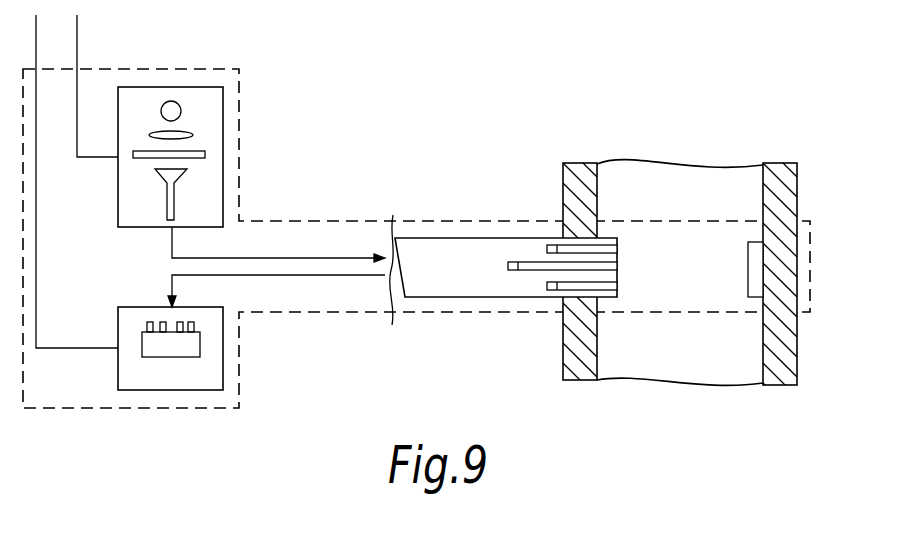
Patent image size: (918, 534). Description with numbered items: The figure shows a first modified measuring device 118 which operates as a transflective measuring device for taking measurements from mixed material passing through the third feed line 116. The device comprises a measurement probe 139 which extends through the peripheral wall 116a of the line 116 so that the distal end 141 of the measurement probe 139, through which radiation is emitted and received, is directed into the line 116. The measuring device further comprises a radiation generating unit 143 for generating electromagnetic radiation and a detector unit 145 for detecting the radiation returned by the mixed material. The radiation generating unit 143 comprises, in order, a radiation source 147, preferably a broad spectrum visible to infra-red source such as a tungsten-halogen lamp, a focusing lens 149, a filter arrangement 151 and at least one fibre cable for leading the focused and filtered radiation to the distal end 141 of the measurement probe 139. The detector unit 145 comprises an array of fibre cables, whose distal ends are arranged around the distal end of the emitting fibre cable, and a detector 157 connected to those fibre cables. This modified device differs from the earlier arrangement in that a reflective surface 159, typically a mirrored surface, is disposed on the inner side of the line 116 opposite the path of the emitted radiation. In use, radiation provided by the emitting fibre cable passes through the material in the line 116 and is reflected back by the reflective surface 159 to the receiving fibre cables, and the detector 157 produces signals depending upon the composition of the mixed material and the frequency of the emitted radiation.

The peripheral wall 116a is at (580, 192).
The third feed line 116 is at (777, 228).
The measuring device 118 is at (338, 322).
The measurement probe 139 is at (507, 297).
The distal end 141 is at (570, 269).
The radiation generating unit 143 is at (182, 130).
The detector unit 145 is at (203, 334).
The radiation source 147 is at (171, 101).
The focusing lens 149 is at (193, 136).
The filter arrangement 151 is at (133, 152).
The detector 157 is at (209, 317).
The reflective surface 159 is at (752, 262).